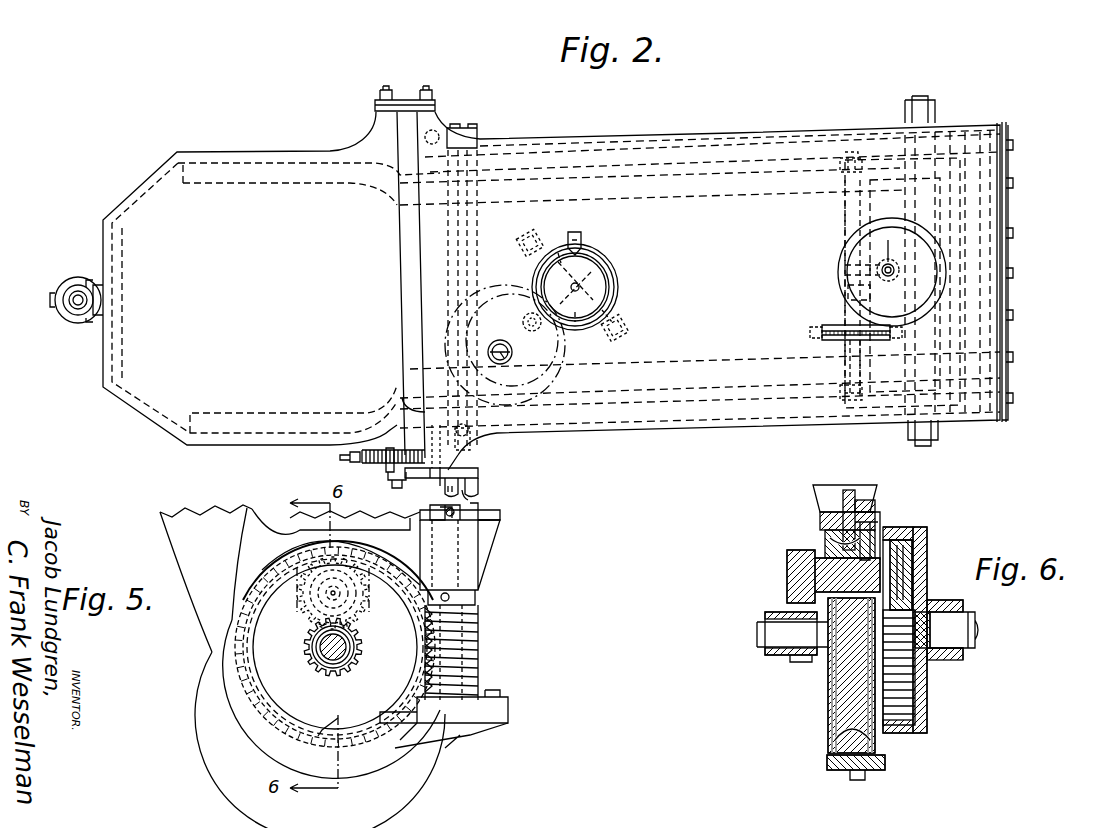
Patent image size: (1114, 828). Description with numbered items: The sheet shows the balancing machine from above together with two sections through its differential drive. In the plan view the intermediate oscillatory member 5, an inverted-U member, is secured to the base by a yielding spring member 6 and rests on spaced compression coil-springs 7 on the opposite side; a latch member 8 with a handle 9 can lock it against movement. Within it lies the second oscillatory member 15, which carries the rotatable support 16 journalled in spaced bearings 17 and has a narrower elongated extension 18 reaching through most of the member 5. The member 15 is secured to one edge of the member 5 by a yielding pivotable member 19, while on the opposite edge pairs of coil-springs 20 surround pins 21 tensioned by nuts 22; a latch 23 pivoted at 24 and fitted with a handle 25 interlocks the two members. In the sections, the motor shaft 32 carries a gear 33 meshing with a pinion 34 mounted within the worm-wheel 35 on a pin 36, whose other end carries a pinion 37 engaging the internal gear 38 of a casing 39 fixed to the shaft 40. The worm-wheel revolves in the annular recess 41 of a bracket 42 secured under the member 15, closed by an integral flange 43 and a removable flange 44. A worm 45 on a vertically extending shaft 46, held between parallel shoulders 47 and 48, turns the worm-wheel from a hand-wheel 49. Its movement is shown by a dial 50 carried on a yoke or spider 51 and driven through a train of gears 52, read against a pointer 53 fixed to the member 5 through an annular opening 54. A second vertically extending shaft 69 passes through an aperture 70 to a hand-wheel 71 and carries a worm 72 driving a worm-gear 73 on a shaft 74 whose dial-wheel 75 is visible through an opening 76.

In FIG. 2, the intermediate oscillatory member 5 is at (712, 138).
In FIG. 2, the yielding spring member 6 is at (1008, 290).
In FIG. 2, the compression coil-springs 7 is at (438, 130).
In FIG. 2, the latch member 8 is at (444, 490).
In FIG. 2, the handle 9 is at (470, 500).
In FIG. 2, the second oscillatory member 15 is at (230, 152).
In FIG. 2, the support 16 is at (76, 310).
In FIG. 2, the bearings 17 is at (74, 280).
In FIG. 2, the elongated extension 18 is at (760, 150).
In FIG. 2, the yielding pivotable member 19 is at (405, 100).
In FIG. 2, the coil-springs 20 is at (388, 468).
In FIG. 2, the pins 21 is at (358, 458).
In FIG. 2, the nuts 22 is at (350, 462).
In FIG. 2, the latch 23 is at (478, 472).
In FIG. 2, the pivot 24 is at (394, 486).
In FIG. 2, the handle 25 is at (479, 486).
In FIG. 5, the motor shaft 32 is at (342, 662).
In FIG. 6, the motor shaft 32 is at (770, 636).
In FIG. 5, the gear 33 is at (318, 662).
In FIG. 6, the gear 33 is at (797, 660).
In FIG. 5, the pinion 34 is at (360, 600).
In FIG. 6, the pinion 34 is at (787, 580).
In FIG. 5, the worm-wheel 35 is at (250, 705).
In FIG. 6, the worm-wheel 35 is at (840, 698).
In FIG. 5, the pin 36 is at (297, 607).
In FIG. 6, the pin 36 is at (927, 545).
In FIG. 5, the pinion 37 is at (352, 556).
In FIG. 6, the pinion 37 is at (912, 568).
In FIG. 5, the internal gear 38 is at (338, 568).
In FIG. 6, the internal gear 38 is at (930, 688).
In FIG. 6, the casing 39 is at (927, 710).
In FIG. 6, the shaft 40 is at (948, 622).
In FIG. 5, the annular recess 41 is at (235, 644).
In FIG. 6, the annular recess 41 is at (820, 518).
In FIG. 5, the bracket 42 is at (290, 578).
In FIG. 6, the bracket 42 is at (820, 495).
In FIG. 5, the integral flange 43 is at (338, 718).
In FIG. 6, the integral flange 43 is at (825, 538).
In FIG. 6, the removable flange 44 is at (870, 540).
In FIG. 5, the worm 45 is at (478, 645).
In FIG. 2, the vertically extending shaft 46 is at (503, 364).
In FIG. 5, the vertically extending shaft 46 is at (500, 523).
In FIG. 5, the shoulder 47 is at (478, 578).
In FIG. 5, the shoulder 48 is at (508, 720).
In FIG. 2, the hand-wheel 49 is at (560, 380).
In FIG. 2, the dial 50 is at (590, 276).
In FIG. 2, the yoke or spider 51 is at (625, 312).
In FIG. 2, the train of gears 52 is at (540, 330).
In FIG. 2, the pointer 53 is at (581, 240).
In FIG. 2, the annular opening 54 is at (590, 258).
In FIG. 2, the vertically extending shaft 69 is at (888, 256).
In FIG. 2, the aperture 70 is at (888, 280).
In FIG. 2, the hand-wheel 71 is at (842, 252).
In FIG. 2, the worm 72 is at (845, 265).
In FIG. 2, the worm-gear 73 is at (848, 289).
In FIG. 2, the shaft 74 is at (850, 223).
In FIG. 2, the dial-wheel 75 is at (834, 325).
In FIG. 2, the opening 76 is at (840, 340).